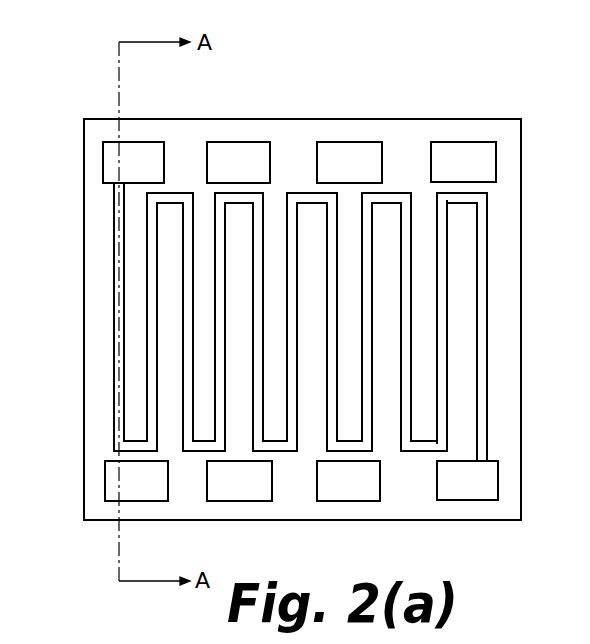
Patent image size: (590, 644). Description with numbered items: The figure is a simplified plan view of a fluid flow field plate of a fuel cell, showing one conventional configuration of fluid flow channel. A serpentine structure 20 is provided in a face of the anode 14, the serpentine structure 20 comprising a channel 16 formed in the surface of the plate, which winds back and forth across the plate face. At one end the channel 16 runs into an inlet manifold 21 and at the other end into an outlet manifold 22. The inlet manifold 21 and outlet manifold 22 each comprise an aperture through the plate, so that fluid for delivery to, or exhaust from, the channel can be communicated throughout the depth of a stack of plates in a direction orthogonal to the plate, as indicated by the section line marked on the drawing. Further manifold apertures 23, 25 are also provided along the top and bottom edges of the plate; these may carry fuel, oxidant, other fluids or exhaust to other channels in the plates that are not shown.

The anode 14 is at (506, 160).
The channel 16 is at (150, 291).
The serpentine structure 20 is at (446, 268).
The inlet manifold 21 is at (142, 148).
The outlet manifold 22 is at (477, 483).
The manifold aperture 23 is at (351, 142).
The manifold aperture 25 is at (235, 142).